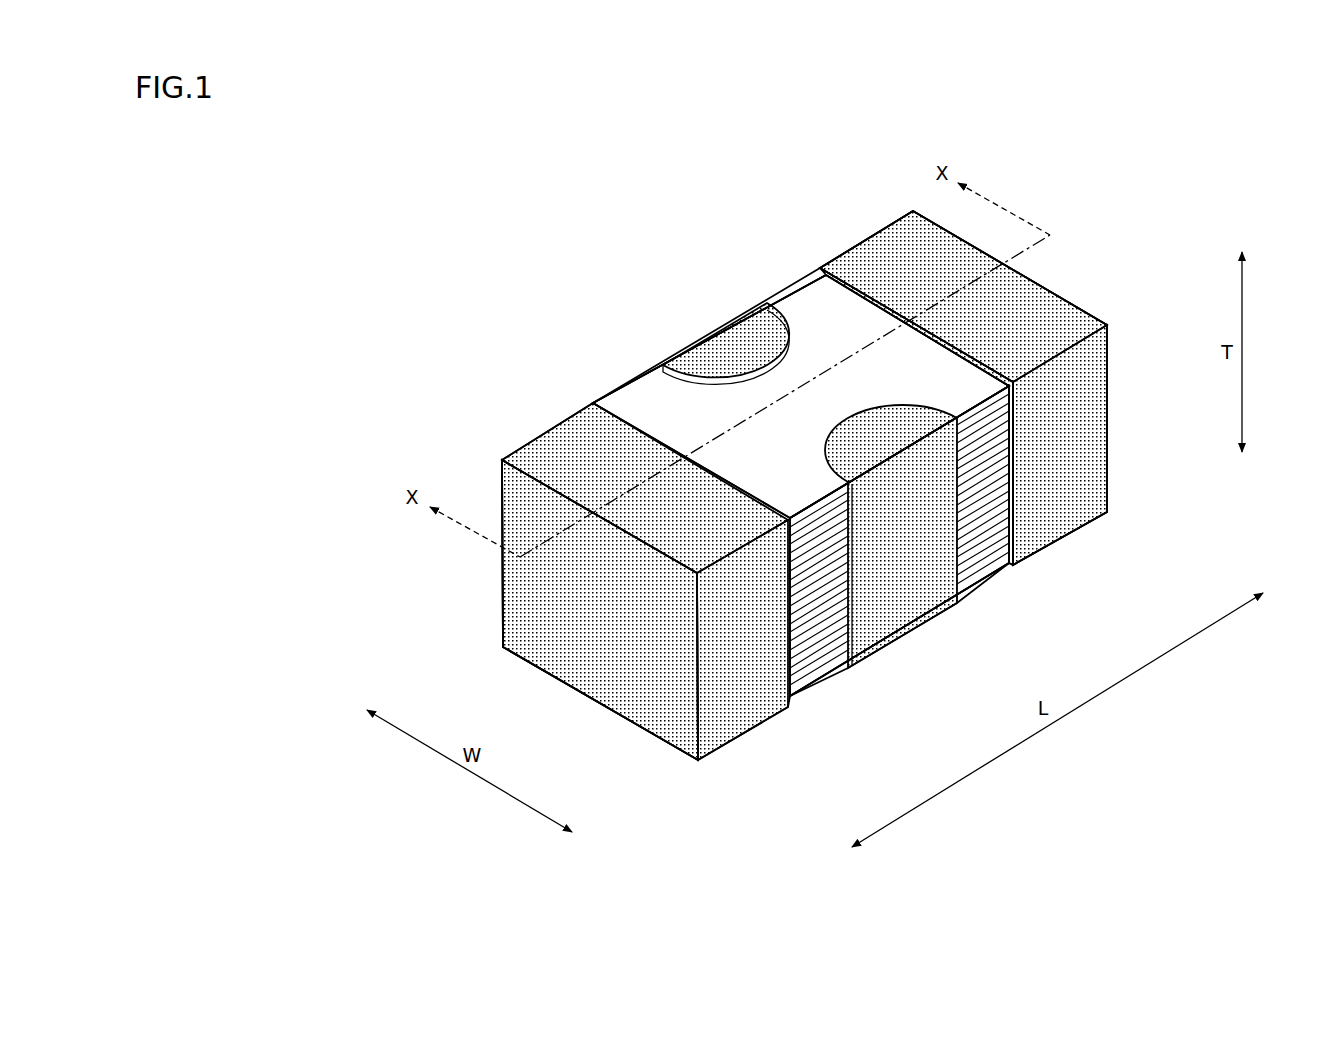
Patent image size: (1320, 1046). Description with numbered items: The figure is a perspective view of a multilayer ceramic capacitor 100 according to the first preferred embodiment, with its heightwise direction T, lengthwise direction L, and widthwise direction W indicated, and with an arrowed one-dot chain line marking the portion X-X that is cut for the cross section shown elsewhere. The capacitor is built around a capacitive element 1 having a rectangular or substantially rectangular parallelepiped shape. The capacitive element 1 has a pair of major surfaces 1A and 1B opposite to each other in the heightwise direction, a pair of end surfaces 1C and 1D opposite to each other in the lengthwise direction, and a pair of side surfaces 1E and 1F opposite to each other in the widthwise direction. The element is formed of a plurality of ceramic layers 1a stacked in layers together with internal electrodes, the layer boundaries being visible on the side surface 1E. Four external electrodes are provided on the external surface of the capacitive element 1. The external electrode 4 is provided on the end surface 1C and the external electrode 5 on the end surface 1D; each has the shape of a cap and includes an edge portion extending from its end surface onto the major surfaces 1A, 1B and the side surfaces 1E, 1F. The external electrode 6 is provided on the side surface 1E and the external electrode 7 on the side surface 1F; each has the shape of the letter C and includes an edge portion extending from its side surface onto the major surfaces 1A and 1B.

The multilayer ceramic capacitor 100 is at (268, 175).
The capacitive element 1 is at (818, 330).
The ceramic layers 1a is at (995, 535).
The major surface 1A is at (835, 695).
The major surface 1B is at (683, 412).
The end surface 1C is at (585, 588).
The end surface 1D is at (1077, 275).
The side surface 1E is at (920, 558).
The side surface 1F is at (687, 323).
The external electrode 4 is at (593, 613).
The external electrode 5 is at (928, 282).
The external electrode 6 is at (918, 527).
The external electrode 7 is at (737, 345).